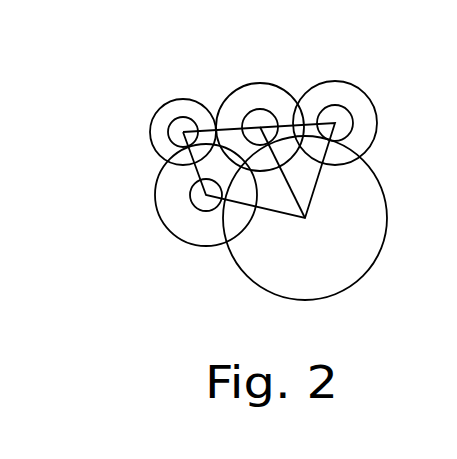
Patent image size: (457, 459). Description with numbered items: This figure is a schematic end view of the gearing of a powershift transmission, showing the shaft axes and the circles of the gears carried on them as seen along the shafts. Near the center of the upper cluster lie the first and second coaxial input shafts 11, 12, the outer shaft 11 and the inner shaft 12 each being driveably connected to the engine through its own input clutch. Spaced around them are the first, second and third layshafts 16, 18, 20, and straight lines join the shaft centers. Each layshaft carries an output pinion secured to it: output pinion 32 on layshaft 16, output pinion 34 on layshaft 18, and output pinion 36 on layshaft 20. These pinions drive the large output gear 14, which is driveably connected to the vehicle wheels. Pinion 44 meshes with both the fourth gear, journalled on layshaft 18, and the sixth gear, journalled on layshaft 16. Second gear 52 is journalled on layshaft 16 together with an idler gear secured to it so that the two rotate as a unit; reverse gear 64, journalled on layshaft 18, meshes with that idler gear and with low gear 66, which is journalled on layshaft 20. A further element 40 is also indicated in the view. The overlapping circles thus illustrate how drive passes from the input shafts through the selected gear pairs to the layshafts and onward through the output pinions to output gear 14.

The first input shaft 11 is at (136, 140).
The second input shaft 12 is at (163, 153).
The output gear 14 is at (287, 300).
The first layshaft 16 is at (177, 217).
The second layshaft 18 is at (262, 108).
The third layshaft 20 is at (335, 123).
The output pinion 32 is at (190, 194).
The output pinion 34 is at (234, 101).
The output pinion 36 is at (364, 98).
The shaft 40 is at (170, 127).
The pinion 44 is at (136, 112).
The second gear 52 is at (163, 223).
The reverse gear 64 is at (283, 88).
The low gear 66 is at (318, 94).